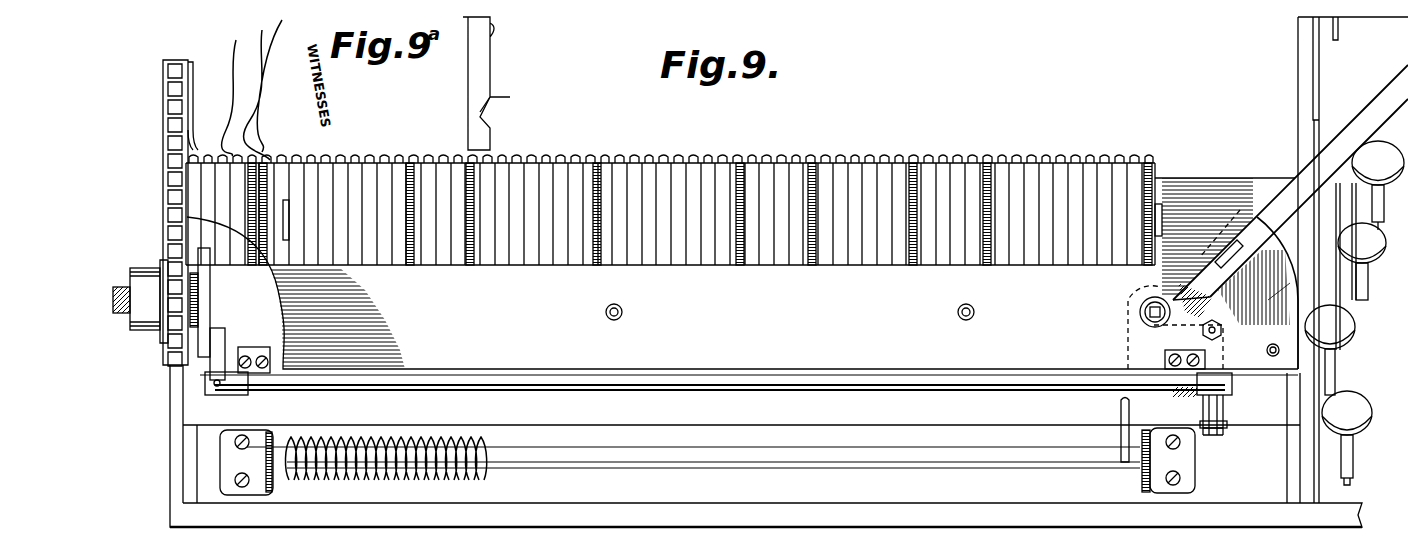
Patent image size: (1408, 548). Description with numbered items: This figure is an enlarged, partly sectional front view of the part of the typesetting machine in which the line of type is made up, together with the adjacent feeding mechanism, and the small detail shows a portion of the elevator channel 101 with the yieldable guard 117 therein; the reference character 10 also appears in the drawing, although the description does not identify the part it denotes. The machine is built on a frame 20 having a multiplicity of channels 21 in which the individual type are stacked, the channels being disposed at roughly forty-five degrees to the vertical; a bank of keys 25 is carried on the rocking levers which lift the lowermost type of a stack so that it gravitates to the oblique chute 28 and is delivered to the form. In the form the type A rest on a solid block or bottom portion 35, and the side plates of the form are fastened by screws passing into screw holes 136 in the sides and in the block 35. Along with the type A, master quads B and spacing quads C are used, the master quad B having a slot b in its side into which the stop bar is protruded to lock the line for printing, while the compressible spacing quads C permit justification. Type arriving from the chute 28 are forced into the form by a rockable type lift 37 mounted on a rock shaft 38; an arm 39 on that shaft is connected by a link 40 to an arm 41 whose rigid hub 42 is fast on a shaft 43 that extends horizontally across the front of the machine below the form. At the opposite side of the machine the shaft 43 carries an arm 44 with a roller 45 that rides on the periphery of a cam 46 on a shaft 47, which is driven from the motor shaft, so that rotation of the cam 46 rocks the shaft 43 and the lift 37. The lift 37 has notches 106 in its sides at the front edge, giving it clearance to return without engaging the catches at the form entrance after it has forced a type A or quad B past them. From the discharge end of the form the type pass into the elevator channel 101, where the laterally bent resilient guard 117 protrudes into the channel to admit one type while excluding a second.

In FIG. 9, the key frame / type bar segment 10 is at (230, 213).
In FIG. 9, the frame 20 is at (578, 522).
In FIG. 9, the channels 21 is at (1341, 22).
In FIG. 9, the bank of keys 25 is at (1382, 205).
In FIG. 9, the oblique chute 28 is at (1290, 191).
In FIG. 9, the solid block or bottom portion 35 is at (742, 276).
In FIG. 9, the rockable type lift 37 is at (1276, 295).
In FIG. 9, the rock shaft 38 is at (1145, 322).
In FIG. 9, the arm 39 is at (1178, 334).
In FIG. 9, the link 40 is at (1224, 357).
In FIG. 9, the arm 41 is at (1230, 396).
In FIG. 9, the rigid hub 42 is at (1203, 404).
In FIG. 9, the shaft 43 is at (992, 384).
In FIG. 9, the arm 44 is at (222, 350).
In FIG. 9, the roller 45 is at (212, 348).
In FIG. 9, the cam 46 is at (206, 276).
In FIG. 9, the shaft 47 is at (120, 293).
In FIG. 9A, the elevator channel 101 is at (468, 66).
In FIG. 9A, the laterally bent resilient guard 117 is at (493, 98).
In FIG. 9, the notches 106 is at (1242, 254).
In FIG. 9, the screw holes 136 is at (623, 311).
In FIG. 9, the type A is at (870, 165).
In FIG. 9, the master quad B is at (275, 163).
In FIG. 9, the spacing quad C is at (738, 165).
In FIG. 9, the slot b is at (290, 212).